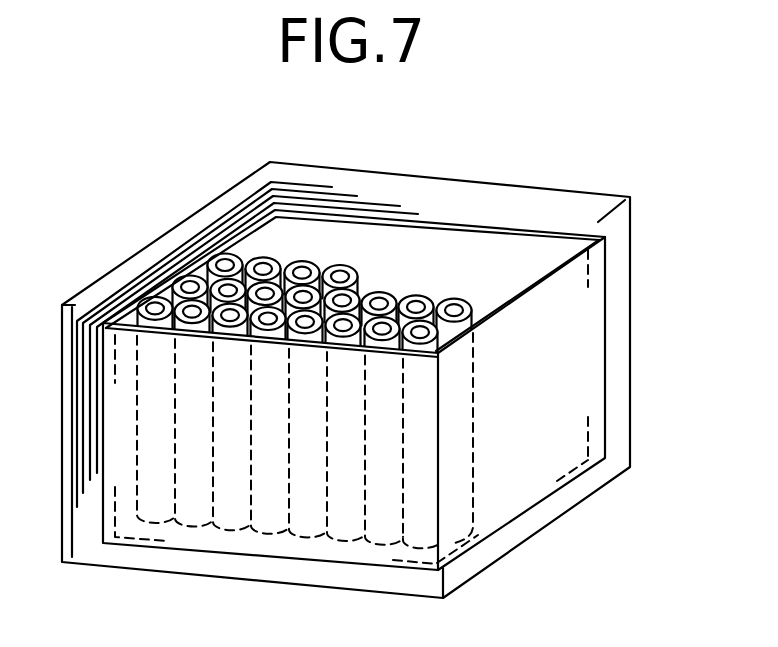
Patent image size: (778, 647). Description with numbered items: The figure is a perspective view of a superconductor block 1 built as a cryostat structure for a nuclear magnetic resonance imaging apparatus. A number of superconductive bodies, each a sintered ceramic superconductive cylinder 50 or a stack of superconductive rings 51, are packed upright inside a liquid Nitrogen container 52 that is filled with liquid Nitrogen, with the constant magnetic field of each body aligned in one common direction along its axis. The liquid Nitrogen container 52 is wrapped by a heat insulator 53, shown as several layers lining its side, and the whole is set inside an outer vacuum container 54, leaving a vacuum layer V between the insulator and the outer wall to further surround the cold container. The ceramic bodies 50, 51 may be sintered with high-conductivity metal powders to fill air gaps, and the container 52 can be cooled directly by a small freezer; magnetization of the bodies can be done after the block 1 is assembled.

The superconductor block 1 is at (361, 159).
The superconductive cylinder 50 is at (354, 403).
The superconductive rings 51 is at (380, 292).
The liquid Nitrogen container 52 is at (531, 284).
The heat insulator 53 is at (238, 205).
The vacuum container 54 is at (453, 178).
The vacuum layer V is at (160, 247).